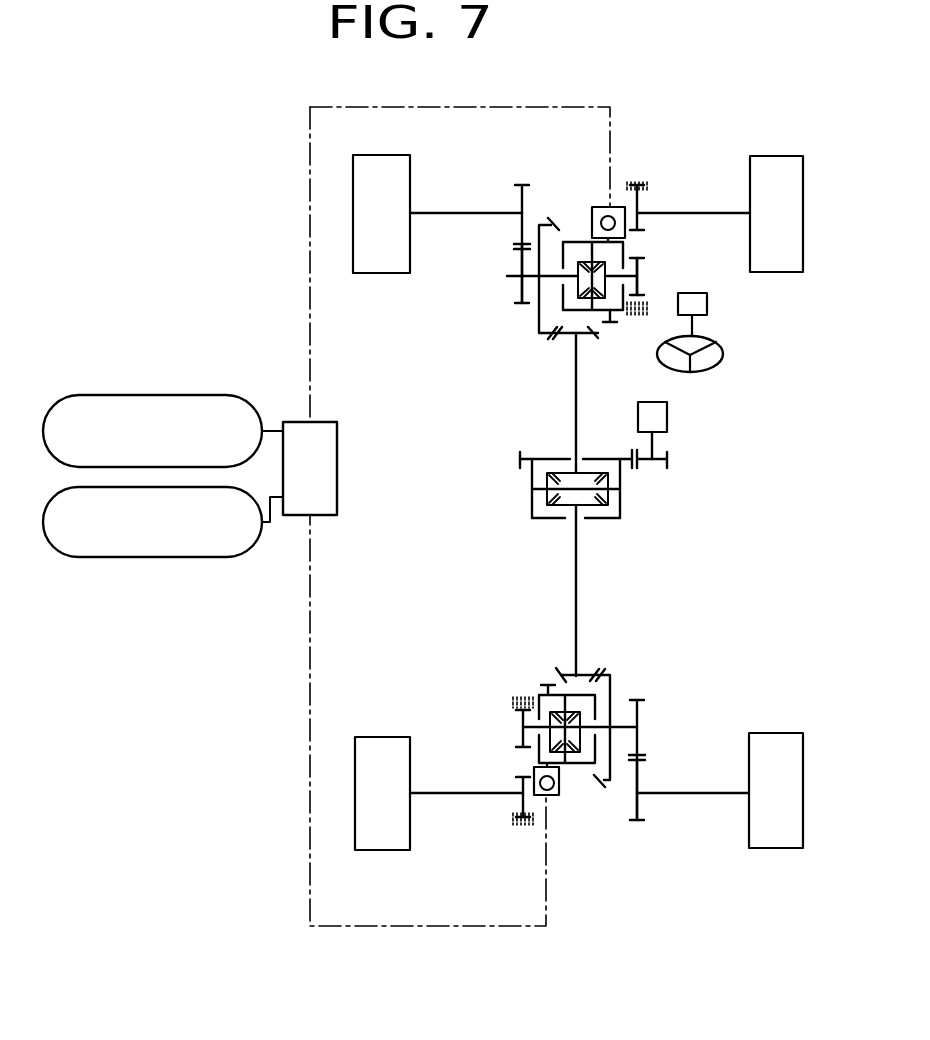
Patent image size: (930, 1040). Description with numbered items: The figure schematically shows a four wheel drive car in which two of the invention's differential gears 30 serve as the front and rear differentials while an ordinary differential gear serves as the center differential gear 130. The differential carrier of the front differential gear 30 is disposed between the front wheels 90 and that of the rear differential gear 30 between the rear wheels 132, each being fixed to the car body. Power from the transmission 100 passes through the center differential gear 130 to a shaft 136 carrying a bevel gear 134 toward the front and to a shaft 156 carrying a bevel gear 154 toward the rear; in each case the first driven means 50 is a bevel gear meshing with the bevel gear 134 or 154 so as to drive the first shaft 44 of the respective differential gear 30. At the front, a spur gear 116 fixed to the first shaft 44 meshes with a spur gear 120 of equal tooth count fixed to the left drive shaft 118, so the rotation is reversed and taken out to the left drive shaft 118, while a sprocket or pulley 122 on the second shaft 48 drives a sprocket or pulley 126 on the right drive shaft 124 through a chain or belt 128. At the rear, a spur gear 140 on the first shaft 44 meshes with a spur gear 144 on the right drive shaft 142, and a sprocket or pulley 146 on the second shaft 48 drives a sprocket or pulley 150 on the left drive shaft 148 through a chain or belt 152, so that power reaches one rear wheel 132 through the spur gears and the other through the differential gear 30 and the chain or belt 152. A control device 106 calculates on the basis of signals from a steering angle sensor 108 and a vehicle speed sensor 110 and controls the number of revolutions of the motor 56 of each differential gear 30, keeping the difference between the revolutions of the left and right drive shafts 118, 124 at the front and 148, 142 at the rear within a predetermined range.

The differential gear 30 is at (642, 252).
The first shaft 44 is at (531, 280).
The second shaft 48 is at (640, 278).
The first driven means 50 is at (539, 334).
The motor 56 is at (624, 206).
The front wheels 90 is at (368, 156).
The transmission 100 is at (667, 416).
The control device 106 is at (337, 458).
The steering angle sensor 108 is at (135, 395).
The vehicle speed sensor 110 is at (135, 557).
The spur gear 116 is at (520, 291).
The left drive shaft 118 is at (455, 213).
The spur gear 120 is at (519, 199).
The sprocket or pulley 122 is at (641, 279).
The right drive shaft 124 is at (718, 212).
The sprocket or pulley 126 is at (641, 208).
The chain or belt 128 is at (630, 318).
The center differential gear 130 is at (621, 502).
The rear wheels 132 is at (372, 737).
The bevel gear 134 is at (563, 338).
The shaft 136 is at (578, 402).
The spur gear 140 is at (640, 712).
The right drive shaft 142 is at (697, 793).
The spur gear 144 is at (640, 803).
The sprocket or pulley 146 is at (520, 722).
The left drive shaft 148 is at (440, 793).
The sprocket or pulley 150 is at (520, 800).
The chain or belt 152 is at (522, 828).
The bevel gear 154 is at (578, 672).
The shaft 156 is at (578, 575).